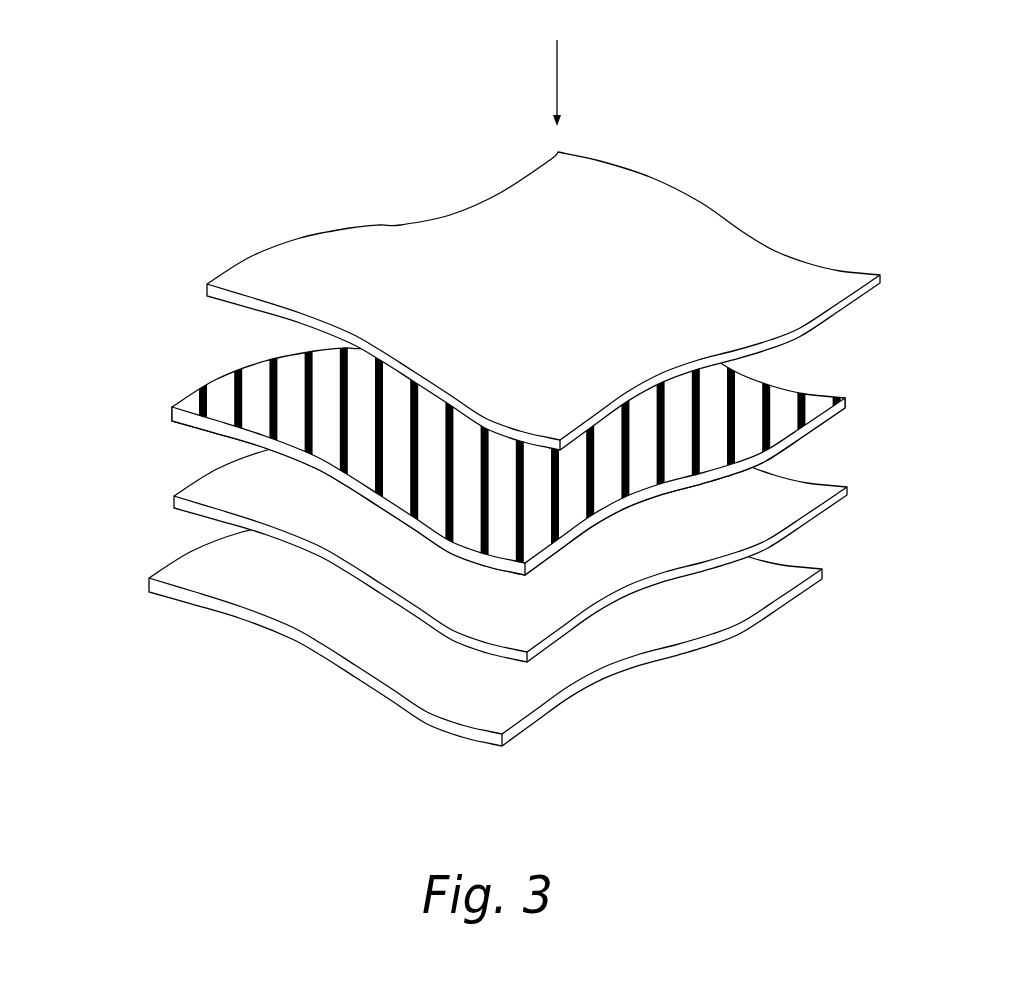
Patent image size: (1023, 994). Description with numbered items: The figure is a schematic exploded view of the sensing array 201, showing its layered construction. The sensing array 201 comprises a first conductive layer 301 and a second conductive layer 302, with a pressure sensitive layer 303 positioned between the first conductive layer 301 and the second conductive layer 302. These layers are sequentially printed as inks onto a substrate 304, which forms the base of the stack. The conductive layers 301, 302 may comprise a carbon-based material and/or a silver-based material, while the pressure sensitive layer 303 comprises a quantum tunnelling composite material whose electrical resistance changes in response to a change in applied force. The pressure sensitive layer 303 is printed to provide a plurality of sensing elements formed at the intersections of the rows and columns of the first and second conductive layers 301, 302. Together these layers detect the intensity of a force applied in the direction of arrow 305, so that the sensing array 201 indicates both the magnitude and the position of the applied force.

The sensing array 201 is at (572, 382).
The first conductive layer 301 is at (847, 280).
The second conductive layer 302 is at (845, 489).
The pressure sensitive layer 303 is at (843, 400).
The substrate 304 is at (795, 572).
The arrow 305 is at (557, 82).